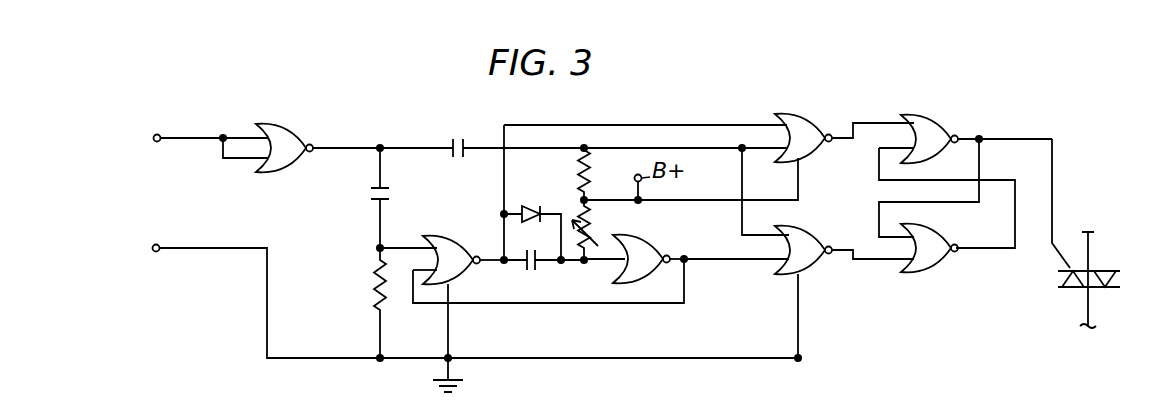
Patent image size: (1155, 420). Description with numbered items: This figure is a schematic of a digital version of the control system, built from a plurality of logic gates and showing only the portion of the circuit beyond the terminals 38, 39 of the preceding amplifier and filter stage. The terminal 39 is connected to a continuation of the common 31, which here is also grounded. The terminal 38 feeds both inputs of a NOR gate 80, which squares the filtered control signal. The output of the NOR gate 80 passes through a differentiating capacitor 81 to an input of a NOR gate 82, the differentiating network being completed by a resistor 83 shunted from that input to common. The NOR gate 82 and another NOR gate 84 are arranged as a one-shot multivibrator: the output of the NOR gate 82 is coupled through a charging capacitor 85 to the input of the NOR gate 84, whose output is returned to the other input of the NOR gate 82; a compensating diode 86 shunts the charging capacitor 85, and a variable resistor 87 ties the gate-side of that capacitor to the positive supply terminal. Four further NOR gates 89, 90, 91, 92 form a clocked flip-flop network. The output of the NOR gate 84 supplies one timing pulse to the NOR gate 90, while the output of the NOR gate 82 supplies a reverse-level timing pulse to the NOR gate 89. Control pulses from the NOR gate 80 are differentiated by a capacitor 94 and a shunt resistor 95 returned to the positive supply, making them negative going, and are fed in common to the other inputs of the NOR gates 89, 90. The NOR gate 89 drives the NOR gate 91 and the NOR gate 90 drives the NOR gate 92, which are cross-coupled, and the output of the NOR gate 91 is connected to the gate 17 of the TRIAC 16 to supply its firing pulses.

The terminal 38 is at (158, 134).
The terminal 39 is at (156, 245).
The NOR gate 80 is at (296, 135).
The differentiating capacitor 81 is at (383, 197).
The NOR gate 82 is at (470, 234).
The resistor 83 is at (377, 284).
The NOR gate 84 is at (650, 254).
The charging capacitor 85 is at (538, 270).
The compensating diode 86 is at (528, 208).
The variable resistor 87 is at (588, 230).
The NOR gate 89 is at (810, 122).
The NOR gate 90 is at (812, 238).
The NOR gate 91 is at (941, 123).
The NOR gate 92 is at (944, 242).
The capacitor 94 is at (465, 140).
The shunt resistor 95 is at (590, 191).
The common 31 is at (556, 359).
The gate 17 is at (1062, 251).
The TRIAC 16 is at (1110, 268).